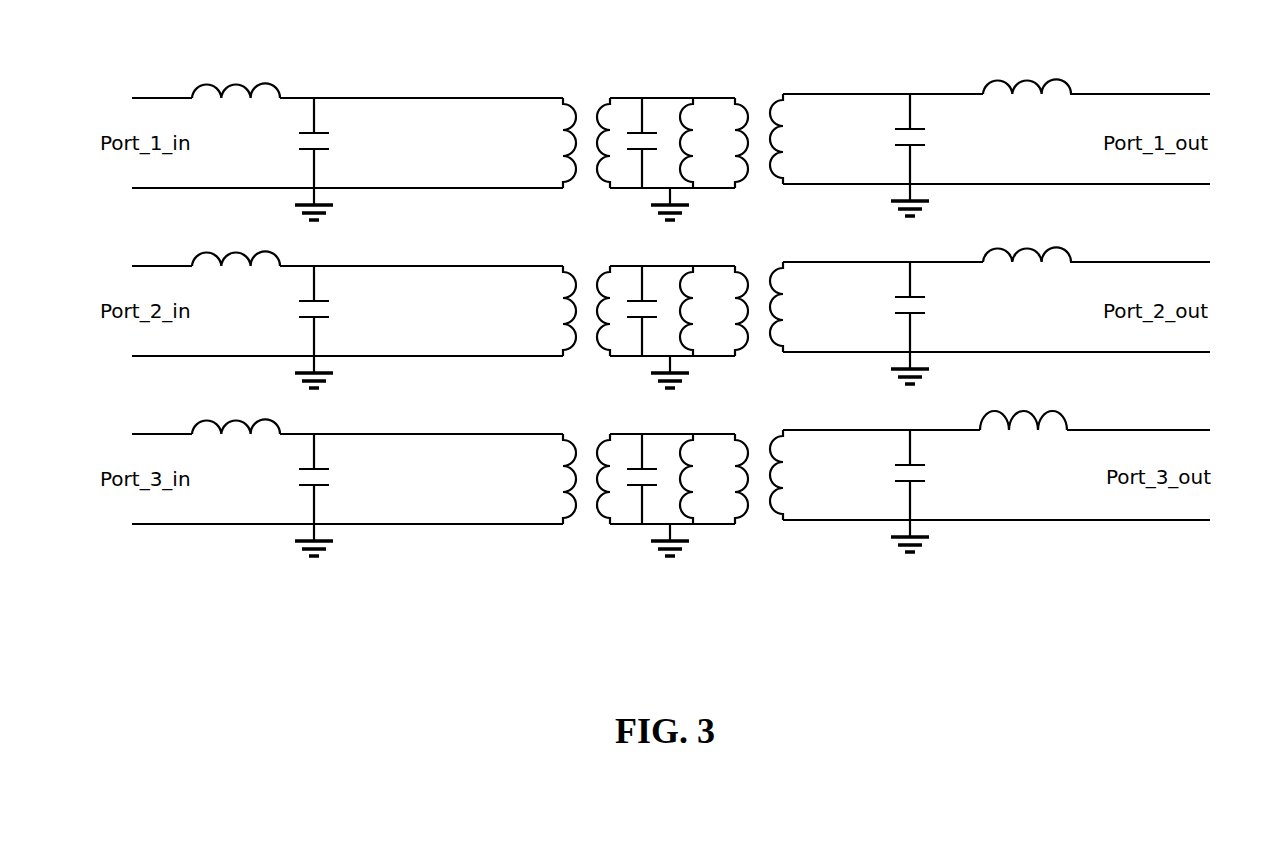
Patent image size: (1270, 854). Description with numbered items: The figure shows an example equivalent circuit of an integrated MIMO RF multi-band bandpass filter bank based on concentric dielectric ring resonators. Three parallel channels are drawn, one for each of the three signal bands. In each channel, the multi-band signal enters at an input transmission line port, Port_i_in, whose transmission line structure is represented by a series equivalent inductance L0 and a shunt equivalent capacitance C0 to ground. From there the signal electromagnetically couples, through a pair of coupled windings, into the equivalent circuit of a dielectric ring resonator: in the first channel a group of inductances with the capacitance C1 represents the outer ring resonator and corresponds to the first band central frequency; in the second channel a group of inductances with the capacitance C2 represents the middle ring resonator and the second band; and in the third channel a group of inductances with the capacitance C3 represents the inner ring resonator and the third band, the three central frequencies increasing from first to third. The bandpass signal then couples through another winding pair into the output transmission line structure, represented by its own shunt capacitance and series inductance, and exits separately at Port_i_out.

The equivalent inductance of input transmission line structure L0 is at (236, 247).
The equivalent capacitance of input transmission line structure C0 is at (302, 327).
The equivalent capacitance of outer ring resonator C1 is at (658, 159).
The equivalent capacitance of middle ring resonator C2 is at (658, 327).
The equivalent capacitance of inner ring resonator C3 is at (658, 495).